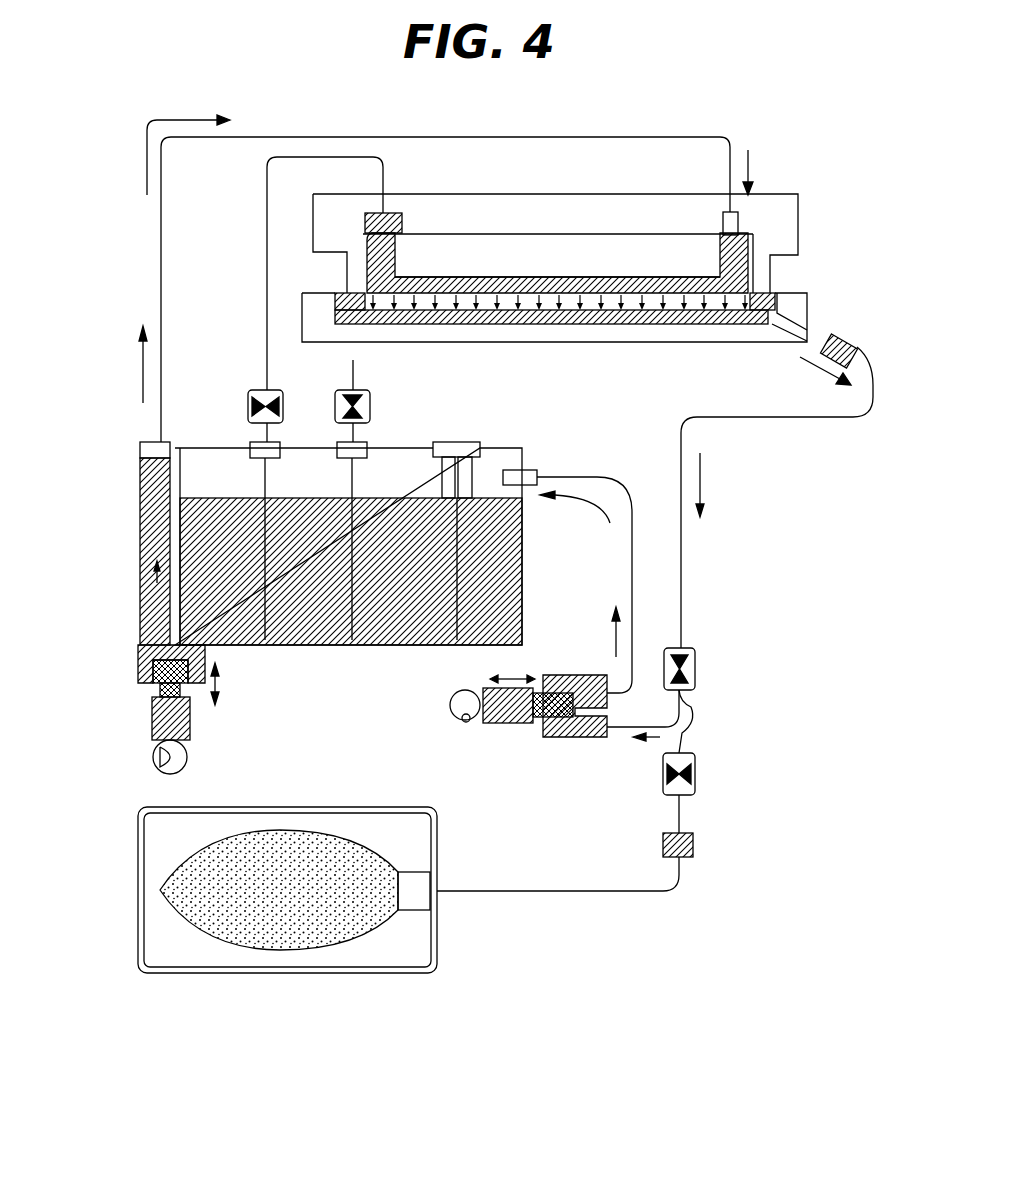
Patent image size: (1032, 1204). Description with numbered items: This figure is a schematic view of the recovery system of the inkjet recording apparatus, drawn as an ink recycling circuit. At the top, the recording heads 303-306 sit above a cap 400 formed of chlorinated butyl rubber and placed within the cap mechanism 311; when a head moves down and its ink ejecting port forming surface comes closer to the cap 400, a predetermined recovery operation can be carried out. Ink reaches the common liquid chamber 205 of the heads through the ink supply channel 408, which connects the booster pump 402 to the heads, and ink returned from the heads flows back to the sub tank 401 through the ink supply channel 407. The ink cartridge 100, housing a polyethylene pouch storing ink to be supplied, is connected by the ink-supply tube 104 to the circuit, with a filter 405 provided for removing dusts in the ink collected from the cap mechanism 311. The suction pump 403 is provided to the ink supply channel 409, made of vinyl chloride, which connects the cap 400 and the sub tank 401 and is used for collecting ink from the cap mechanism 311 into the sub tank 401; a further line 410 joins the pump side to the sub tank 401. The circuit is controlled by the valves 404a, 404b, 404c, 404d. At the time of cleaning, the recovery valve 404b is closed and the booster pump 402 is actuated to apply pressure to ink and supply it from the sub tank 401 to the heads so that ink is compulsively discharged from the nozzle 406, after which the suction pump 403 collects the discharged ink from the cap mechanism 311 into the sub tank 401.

The ink cartridge 100 is at (170, 953).
The ink-supply tube 104 is at (548, 893).
The common liquid chamber 205 is at (497, 277).
The recording heads 303-306 is at (770, 203).
The cap mechanism 311 is at (803, 293).
The cap 400 is at (345, 293).
The sub tank 401 is at (338, 645).
The booster pump 402 is at (138, 668).
The suction pump 403 is at (575, 737).
The valve 404a is at (695, 770).
The recovery valve 404b is at (247, 413).
The valve 404c is at (372, 400).
The valve 404d is at (695, 663).
The filter 405 is at (385, 213).
The nozzle 406 is at (570, 342).
The ink supply channel 407 is at (267, 335).
The ink supply channel 408 is at (160, 273).
The ink supply channel 409 is at (785, 418).
The tube 410 is at (568, 477).